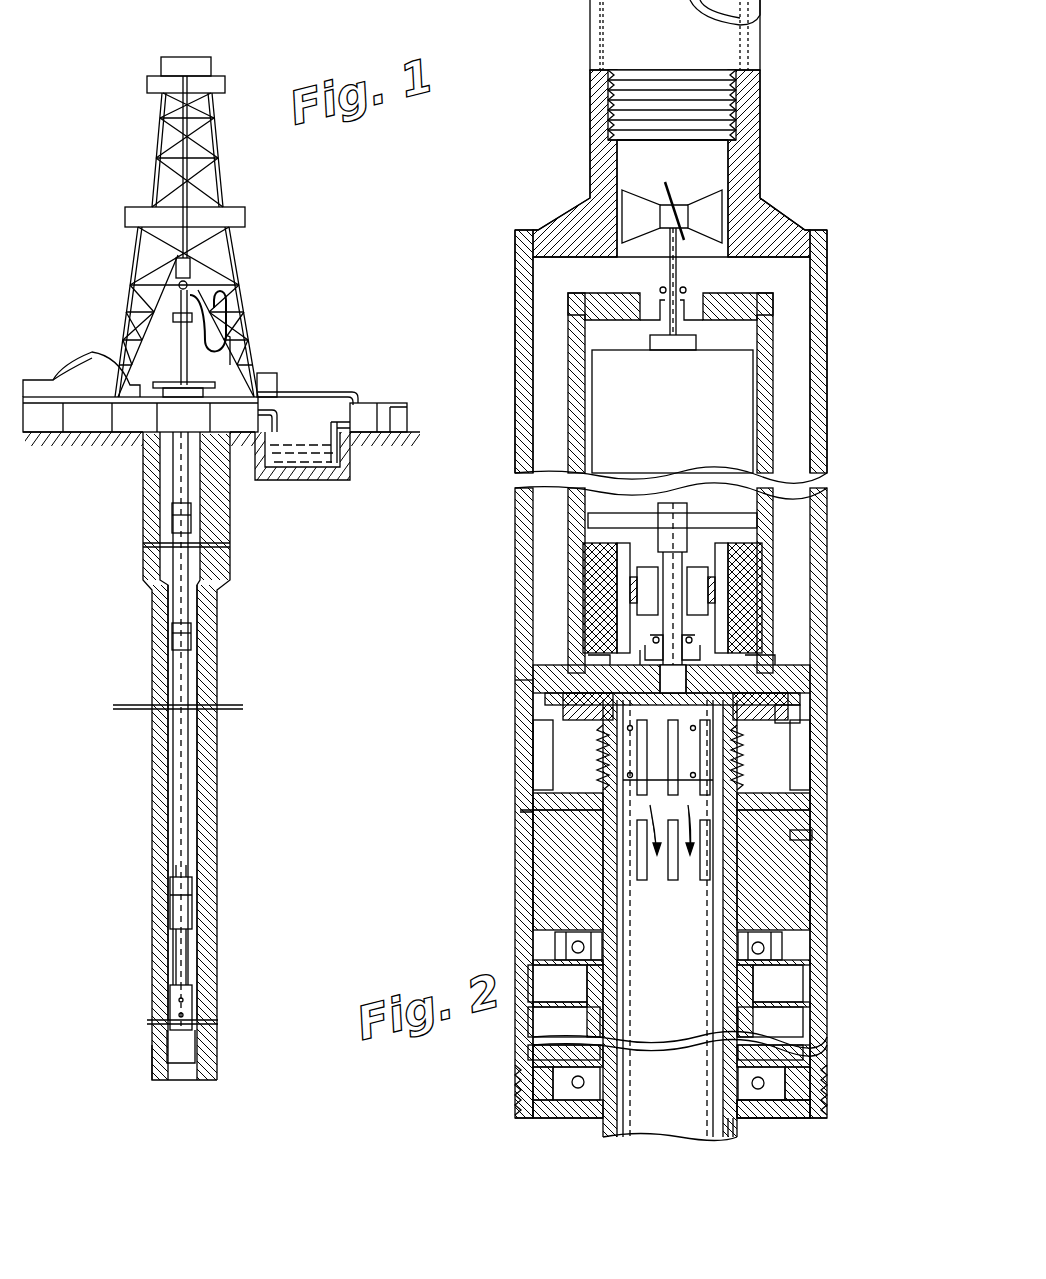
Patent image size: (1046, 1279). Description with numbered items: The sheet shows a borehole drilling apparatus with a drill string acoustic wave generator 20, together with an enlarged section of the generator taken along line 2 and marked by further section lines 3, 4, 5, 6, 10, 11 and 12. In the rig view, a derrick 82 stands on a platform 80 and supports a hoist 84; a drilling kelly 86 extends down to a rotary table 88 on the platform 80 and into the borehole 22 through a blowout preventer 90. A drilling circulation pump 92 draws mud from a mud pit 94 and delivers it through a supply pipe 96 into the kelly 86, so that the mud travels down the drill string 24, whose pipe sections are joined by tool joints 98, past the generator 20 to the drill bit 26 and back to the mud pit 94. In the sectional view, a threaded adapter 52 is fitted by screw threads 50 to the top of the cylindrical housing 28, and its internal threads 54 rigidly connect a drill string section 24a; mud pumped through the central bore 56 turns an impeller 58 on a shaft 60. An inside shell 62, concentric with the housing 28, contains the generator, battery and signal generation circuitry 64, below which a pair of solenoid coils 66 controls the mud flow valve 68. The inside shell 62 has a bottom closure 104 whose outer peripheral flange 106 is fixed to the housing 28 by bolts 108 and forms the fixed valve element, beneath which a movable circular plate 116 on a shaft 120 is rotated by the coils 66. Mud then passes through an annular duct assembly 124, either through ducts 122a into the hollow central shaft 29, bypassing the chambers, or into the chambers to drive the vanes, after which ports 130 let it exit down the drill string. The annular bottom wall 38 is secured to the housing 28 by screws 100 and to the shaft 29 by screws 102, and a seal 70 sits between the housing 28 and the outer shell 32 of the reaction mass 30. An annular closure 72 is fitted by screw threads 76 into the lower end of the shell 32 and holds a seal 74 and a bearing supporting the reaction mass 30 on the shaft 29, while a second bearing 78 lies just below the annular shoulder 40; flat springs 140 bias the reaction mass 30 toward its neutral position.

In FIG. 1, the section line 2 is at (138, 860).
In FIG. 1, the acoustic wave generator 20 is at (190, 905).
In FIG. 1, the borehole 22 is at (190, 828).
In FIG. 1, the drill string 24 is at (185, 752).
In FIG. 2, the drill string section 24a is at (755, 45).
In FIG. 1, the drill bit 26 is at (190, 1056).
In FIG. 2, the housing 28 is at (826, 604).
In FIG. 2, the hollow central shaft 29 is at (735, 1128).
In FIG. 2, the reaction mass 30 is at (840, 932).
In FIG. 2, the outer shell 32 is at (828, 882).
In FIG. 2, the annular bottom wall 38 is at (812, 838).
In FIG. 2, the annular shoulder 40 is at (765, 940).
In FIG. 2, the screw threads 50 is at (830, 268).
In FIG. 2, the threaded adapter 52 is at (765, 150).
In FIG. 2, the internal threads 54 is at (762, 107).
In FIG. 2, the central bore 56 is at (733, 172).
In FIG. 2, the impeller 58 is at (714, 212).
In FIG. 2, the shaft 60 is at (682, 265).
In FIG. 2, the inside shell 62 is at (775, 372).
In FIG. 2, the generator, battery and signal generation circuitry 64 is at (745, 405).
In FIG. 2, the solenoid coils 66 is at (585, 565).
In FIG. 2, the mud flow control valve 68 is at (785, 672).
In FIG. 2, the seal 70 is at (520, 822).
In FIG. 2, the annular closure 72 is at (785, 1105).
In FIG. 2, the seal 74 is at (578, 1105).
In FIG. 2, the threads 76 is at (545, 1105).
In FIG. 2, the second bearing 78 is at (776, 977).
In FIG. 1, the platform 80 is at (85, 358).
In FIG. 1, the derrick 82 is at (243, 262).
In FIG. 1, the hoist 84 is at (200, 248).
In FIG. 1, the drilling kelly 86 is at (188, 355).
In FIG. 1, the rotary table 88 is at (205, 386).
In FIG. 1, the blowout preventer 90 is at (178, 452).
In FIG. 1, the drilling circulation pump 92 is at (380, 412).
In FIG. 1, the mud pit 94 is at (300, 482).
In FIG. 1, the supply pipe 96 is at (362, 390).
In FIG. 1, the tool joints 98 is at (191, 515).
In FIG. 2, the screws 100 is at (886, 786).
In FIG. 2, the screws 102 is at (600, 780).
In FIG. 2, the bottom closure 104 is at (781, 659).
In FIG. 2, the outer peripheral flange 106 is at (533, 672).
In FIG. 2, the bolts 108 is at (830, 685).
In FIG. 2, the movable circular plate 116 is at (790, 722).
In FIG. 2, the shaft 120 is at (665, 672).
In FIG. 2, the ducts 122a is at (660, 782).
In FIG. 2, the annular duct assembly 124 is at (550, 770).
In FIG. 2, the ports 130 is at (700, 885).
In FIG. 2, the flat springs 140 is at (541, 984).
In FIG. 2, the section line 3- 3 is at (515, 690).
In FIG. 2, the section line 4- 4 is at (515, 700).
In FIG. 2, the section line 5- 5 is at (515, 760).
In FIG. 2, the section line 6- 6 is at (515, 868).
In FIG. 2, the section line 10- 10 is at (512, 527).
In FIG. 2, the section line 11- 11 is at (553, 577).
In FIG. 2, the section line 12- 12 is at (515, 798).